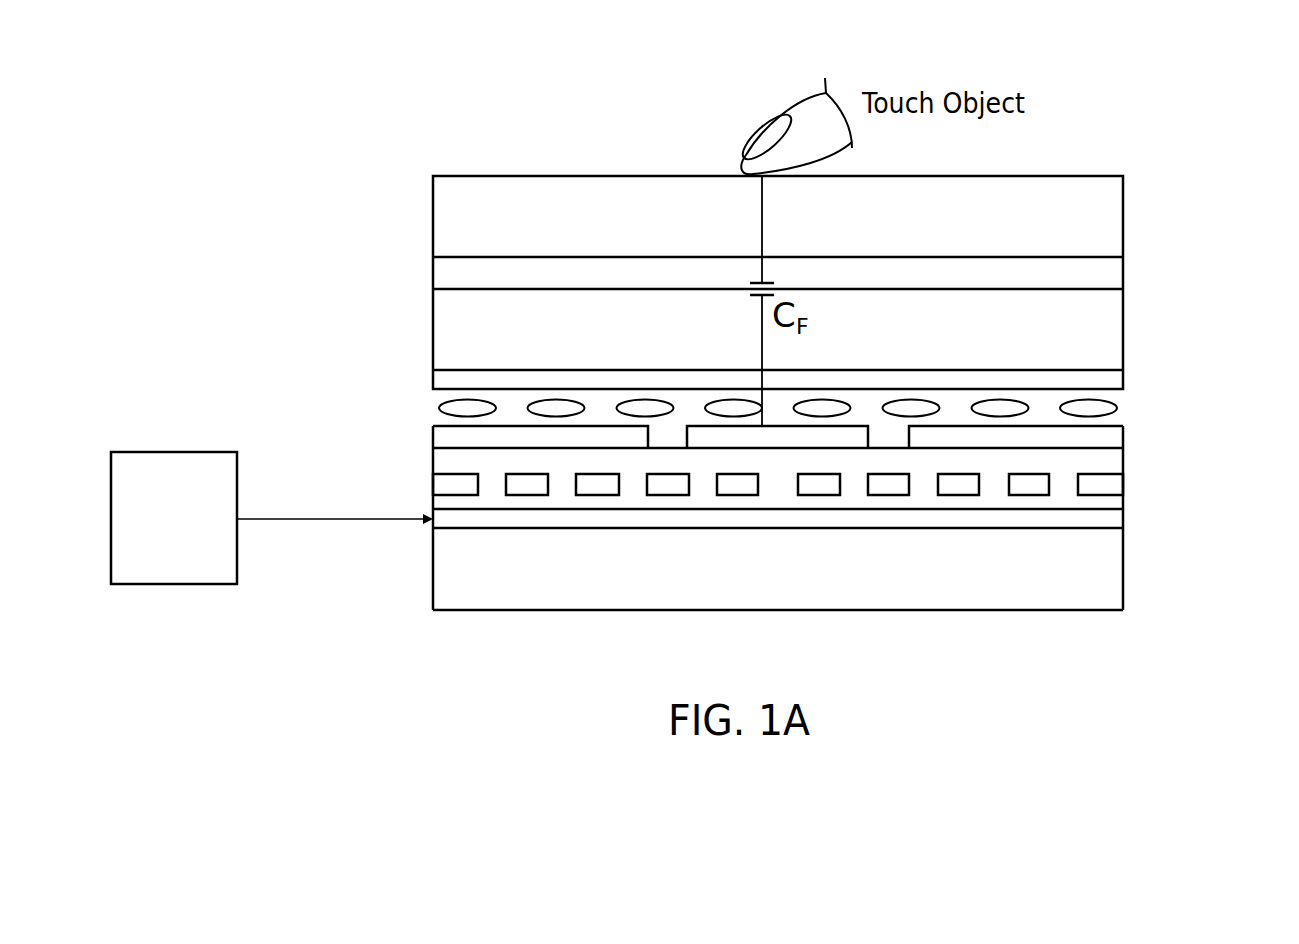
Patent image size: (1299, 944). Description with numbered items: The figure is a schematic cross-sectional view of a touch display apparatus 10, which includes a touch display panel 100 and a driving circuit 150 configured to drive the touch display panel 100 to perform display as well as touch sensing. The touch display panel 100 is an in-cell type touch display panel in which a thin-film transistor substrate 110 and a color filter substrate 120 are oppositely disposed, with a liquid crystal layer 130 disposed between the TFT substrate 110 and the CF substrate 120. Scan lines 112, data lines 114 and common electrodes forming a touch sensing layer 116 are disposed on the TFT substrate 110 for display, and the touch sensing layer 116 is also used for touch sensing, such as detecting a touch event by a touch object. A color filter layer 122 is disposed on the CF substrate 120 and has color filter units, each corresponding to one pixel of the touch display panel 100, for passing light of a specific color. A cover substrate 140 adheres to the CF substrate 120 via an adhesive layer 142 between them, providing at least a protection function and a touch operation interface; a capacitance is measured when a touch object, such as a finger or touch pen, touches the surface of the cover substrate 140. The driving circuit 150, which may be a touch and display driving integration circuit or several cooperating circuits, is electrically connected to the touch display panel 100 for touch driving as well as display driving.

The touch display apparatus 10 is at (474, 86).
The touch display panel 100 is at (1196, 176).
The thin-film transistor substrate 110 is at (1115, 572).
The scan lines 112 is at (1115, 520).
The data lines 114 is at (1115, 483).
The touch sensing layer 116 is at (1115, 433).
The color filter substrate 120 is at (443, 318).
The color filter layer 122 is at (443, 380).
The liquid crystal layer 130 is at (426, 410).
The cover substrate 140 is at (443, 218).
The adhesive layer 142 is at (443, 270).
The driving circuit 150 is at (172, 585).